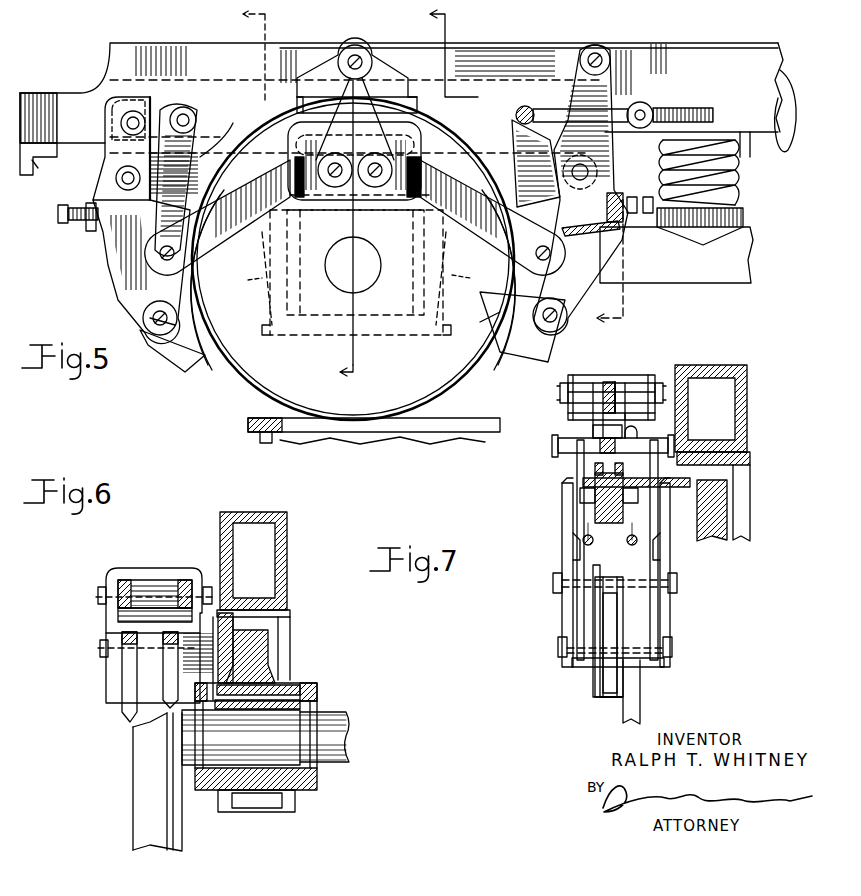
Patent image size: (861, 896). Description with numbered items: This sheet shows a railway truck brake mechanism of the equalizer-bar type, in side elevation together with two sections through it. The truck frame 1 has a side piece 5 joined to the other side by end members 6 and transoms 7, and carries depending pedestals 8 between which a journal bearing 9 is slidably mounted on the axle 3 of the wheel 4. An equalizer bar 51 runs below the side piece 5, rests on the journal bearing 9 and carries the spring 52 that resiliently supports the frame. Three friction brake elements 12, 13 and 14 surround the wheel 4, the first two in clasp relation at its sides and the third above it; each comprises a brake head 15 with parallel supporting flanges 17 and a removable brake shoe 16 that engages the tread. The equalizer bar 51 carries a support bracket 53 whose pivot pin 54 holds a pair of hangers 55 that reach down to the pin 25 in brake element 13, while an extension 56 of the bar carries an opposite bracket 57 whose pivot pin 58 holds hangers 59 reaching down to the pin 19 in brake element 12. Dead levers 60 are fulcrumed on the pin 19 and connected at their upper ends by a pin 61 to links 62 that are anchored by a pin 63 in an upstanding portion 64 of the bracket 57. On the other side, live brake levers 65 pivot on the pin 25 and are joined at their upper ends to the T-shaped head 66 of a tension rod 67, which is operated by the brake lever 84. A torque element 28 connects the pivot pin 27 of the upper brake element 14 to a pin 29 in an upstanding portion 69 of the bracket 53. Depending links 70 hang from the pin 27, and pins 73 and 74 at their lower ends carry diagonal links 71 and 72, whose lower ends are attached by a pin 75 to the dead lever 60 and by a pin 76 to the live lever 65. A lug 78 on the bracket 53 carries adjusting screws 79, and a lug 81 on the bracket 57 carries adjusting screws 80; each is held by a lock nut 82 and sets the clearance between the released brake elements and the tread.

In FIG. 5, the truck frame 1 is at (160, 47).
In FIG. 5, the axle 3 is at (347, 283).
In FIG. 6, the axle 3 is at (340, 730).
In FIG. 5, the wheel 4 is at (455, 388).
In FIG. 6, the wheel 4 is at (184, 840).
In FIG. 7, the wheel 4 is at (641, 706).
In FIG. 5, the side piece 5 is at (690, 47).
In FIG. 6, the side piece 5 is at (289, 558).
In FIG. 7, the side piece 5 is at (740, 408).
In FIG. 5, the end member 6 is at (202, 194).
In FIG. 5, the transom 7 is at (535, 167).
In FIG. 5, the pedestal 8 is at (351, 278).
In FIG. 6, the pedestal 8 is at (292, 652).
In FIG. 7, the pedestal 8 is at (744, 490).
In FIG. 5, the journal bearing 9 is at (390, 305).
In FIG. 6, the journal bearing 9 is at (290, 684).
In FIG. 5, the friction brake element 12 is at (203, 320).
In FIG. 5, the friction brake element 13 is at (498, 320).
In FIG. 7, the friction brake element 13 is at (598, 690).
In FIG. 5, the friction brake element 14 is at (372, 68).
In FIG. 7, the friction brake element 14 is at (593, 432).
In FIG. 5, the brake head 15 is at (322, 60).
In FIG. 7, the brake head 15 is at (593, 425).
In FIG. 5, the brake shoe 16 is at (208, 332).
In FIG. 7, the brake shoe 16 is at (618, 700).
In FIG. 5, the supporting flange 17 is at (300, 60).
In FIG. 7, the supporting flange 17 is at (600, 385).
In FIG. 5, the pin 19 is at (152, 318).
In FIG. 5, the pin 25 is at (570, 322).
In FIG. 7, the pin 25 is at (558, 647).
In FIG. 5, the pivot pin 27 is at (358, 48).
In FIG. 7, the pivot pin 27 is at (560, 395).
In FIG. 5, the torque element 28 is at (500, 58).
In FIG. 7, the torque element 28 is at (618, 400).
In FIG. 5, the pin 29 is at (598, 47).
In FIG. 5, the equalizer bar 51 is at (742, 261).
In FIG. 6, the equalizer bar 51 is at (270, 640).
In FIG. 7, the equalizer bar 51 is at (729, 510).
In FIG. 5, the spring 52 is at (738, 178).
In FIG. 5, the support bracket 53 is at (605, 172).
In FIG. 7, the support bracket 53 is at (592, 481).
In FIG. 5, the pivot pin 54 is at (600, 162).
In FIG. 7, the pivot pin 54 is at (580, 510).
In FIG. 5, the hanger 55 is at (598, 232).
In FIG. 7, the hanger 55 is at (628, 545).
In FIG. 5, the extension 56 is at (233, 130).
In FIG. 5, the bracket 57 is at (100, 165).
In FIG. 6, the bracket 57 is at (222, 640).
In FIG. 5, the pivot pin 58 is at (118, 180).
In FIG. 6, the pivot pin 58 is at (100, 648).
In FIG. 5, the hanger 59 is at (110, 263).
In FIG. 6, the hanger 59 is at (165, 703).
In FIG. 5, the dead lever 60 is at (176, 256).
In FIG. 5, the pin 61 is at (195, 116).
In FIG. 5, the link 62 is at (168, 108).
In FIG. 6, the link 62 is at (150, 578).
In FIG. 5, the pin 63 is at (125, 124).
In FIG. 6, the pin 63 is at (98, 594).
In FIG. 5, the upstanding portion 64 is at (115, 106).
In FIG. 6, the upstanding portion 64 is at (122, 578).
In FIG. 5, the live brake lever 65 is at (558, 200).
In FIG. 7, the live brake lever 65 is at (572, 616).
In FIG. 5, the T-shaped head 66 is at (515, 116).
In FIG. 7, the T-shaped head 66 is at (556, 448).
In FIG. 5, the tension rod 67 is at (640, 102).
In FIG. 7, the tension rod 67 is at (595, 458).
In FIG. 5, the upstanding portion 69 is at (600, 85).
In FIG. 5, the depending link 70 is at (398, 102).
In FIG. 7, the depending link 70 is at (606, 366).
In FIG. 5, the link 71 is at (285, 205).
In FIG. 5, the link 72 is at (448, 200).
In FIG. 7, the link 72 is at (562, 558).
In FIG. 5, the pin 73 is at (336, 190).
In FIG. 5, the pin 74 is at (378, 190).
In FIG. 5, the pin 75 is at (108, 268).
In FIG. 5, the pin 76 is at (535, 253).
In FIG. 7, the pin 76 is at (553, 583).
In FIG. 5, the lug 78 is at (615, 195).
In FIG. 5, the adjusting screw 79 is at (670, 232).
In FIG. 5, the adjusting screw 80 is at (56, 212).
In FIG. 5, the lug 81 is at (90, 228).
In FIG. 6, the lug 81 is at (106, 684).
In FIG. 5, the lock nut 82 is at (84, 215).
In FIG. 5, the brake lever 84 is at (694, 90).